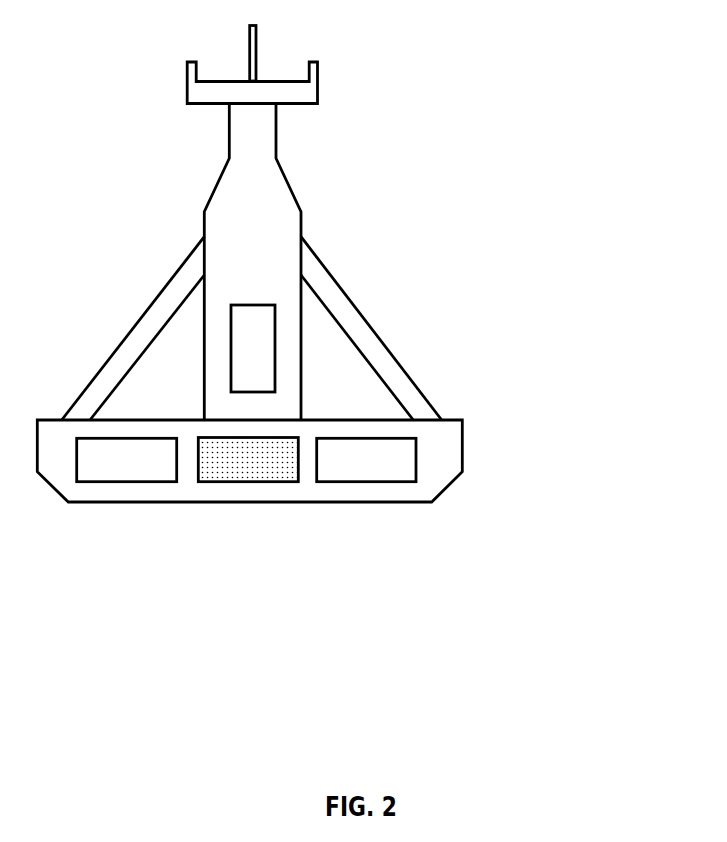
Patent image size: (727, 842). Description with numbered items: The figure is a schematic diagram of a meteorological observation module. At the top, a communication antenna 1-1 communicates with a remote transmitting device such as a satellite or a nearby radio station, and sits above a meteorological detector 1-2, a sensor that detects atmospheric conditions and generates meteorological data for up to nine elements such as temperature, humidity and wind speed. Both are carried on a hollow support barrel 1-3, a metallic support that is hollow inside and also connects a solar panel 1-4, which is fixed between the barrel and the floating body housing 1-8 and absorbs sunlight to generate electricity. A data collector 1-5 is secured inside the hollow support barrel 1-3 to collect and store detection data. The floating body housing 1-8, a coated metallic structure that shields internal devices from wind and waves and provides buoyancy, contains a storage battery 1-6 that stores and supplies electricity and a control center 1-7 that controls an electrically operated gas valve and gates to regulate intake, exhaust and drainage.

The communication antenna 1-1 is at (252, 43).
The meteorological detector 1-2 is at (252, 95).
The hollow support barrel 1-3 is at (249, 206).
The solar panel 1-4 is at (318, 273).
The data collector 1-5 is at (250, 346).
The storage battery 1-6 is at (382, 443).
The control center 1-7 is at (252, 467).
The floating body housing 1-8 is at (250, 488).